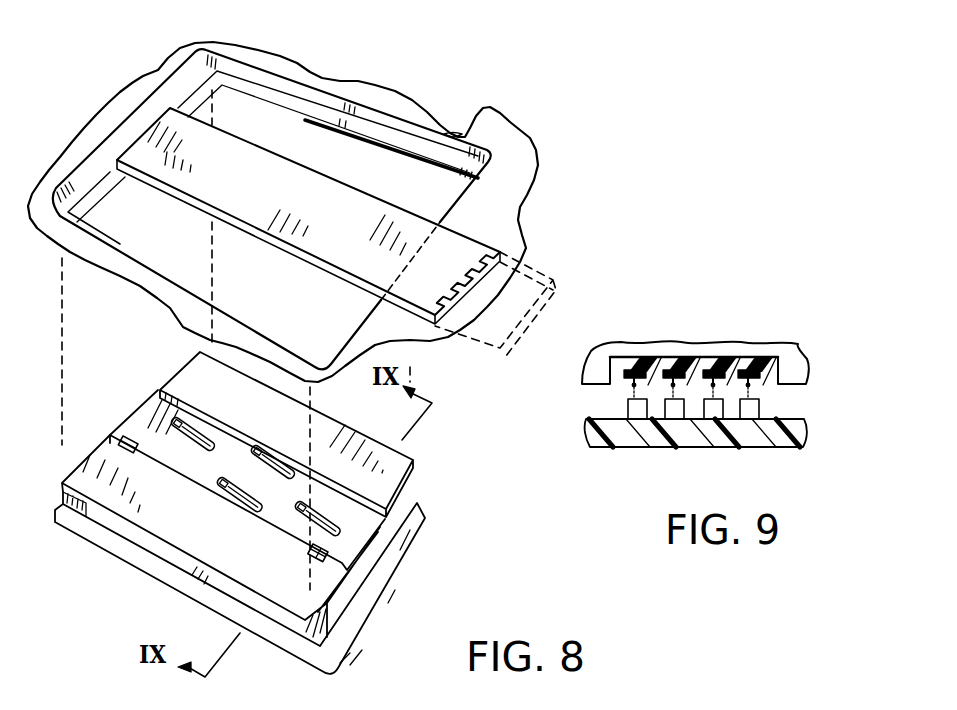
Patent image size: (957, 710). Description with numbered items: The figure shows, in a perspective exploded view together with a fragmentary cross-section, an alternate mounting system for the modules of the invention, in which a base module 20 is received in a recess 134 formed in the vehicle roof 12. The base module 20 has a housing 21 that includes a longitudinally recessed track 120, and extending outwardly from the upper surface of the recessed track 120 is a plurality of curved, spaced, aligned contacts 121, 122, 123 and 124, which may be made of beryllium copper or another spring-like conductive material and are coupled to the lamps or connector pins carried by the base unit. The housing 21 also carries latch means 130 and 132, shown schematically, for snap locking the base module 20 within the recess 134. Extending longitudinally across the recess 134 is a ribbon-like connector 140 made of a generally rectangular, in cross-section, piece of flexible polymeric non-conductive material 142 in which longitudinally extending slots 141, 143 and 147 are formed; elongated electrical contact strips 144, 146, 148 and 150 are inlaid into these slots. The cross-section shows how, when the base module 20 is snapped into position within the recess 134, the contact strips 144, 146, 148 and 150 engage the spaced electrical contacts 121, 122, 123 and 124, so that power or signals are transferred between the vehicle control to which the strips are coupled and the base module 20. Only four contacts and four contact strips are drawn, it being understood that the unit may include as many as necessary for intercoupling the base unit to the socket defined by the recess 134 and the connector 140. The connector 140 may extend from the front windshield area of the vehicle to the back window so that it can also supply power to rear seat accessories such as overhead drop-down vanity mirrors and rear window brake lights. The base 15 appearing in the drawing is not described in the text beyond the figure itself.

In FIG. 8, the vehicle roof 12 is at (527, 142).
In FIG. 8, the recess 134 is at (465, 136).
In FIG. 8, the ribbon-like connector 140 is at (478, 252).
In FIG. 8, the housing 21 is at (415, 473).
In FIG. 8, the longitudinally recessed track 120 is at (365, 530).
In FIG. 9, the longitudinally recessed track 120 is at (785, 428).
In FIG. 8, the base 15 is at (400, 556).
In FIG. 8, the base module 20 is at (399, 603).
In FIG. 8, the latch means 130 is at (132, 437).
In FIG. 8, the latch means 132 is at (313, 552).
In FIG. 8, the contact 121 is at (173, 421).
In FIG. 9, the contact 121 is at (725, 421).
In FIG. 8, the contact 122 is at (276, 447).
In FIG. 9, the contact 122 is at (760, 411).
In FIG. 8, the contact 123 is at (222, 483).
In FIG. 9, the contact 123 is at (626, 417).
In FIG. 8, the contact 124 is at (300, 508).
In FIG. 9, the contact 124 is at (670, 422).
In FIG. 9, the electrical contact strip 150 is at (788, 352).
In FIG. 9, the electrical contact strip 144 is at (633, 368).
In FIG. 9, the flexible polymeric non-conductive material 142 is at (665, 373).
In FIG. 9, the electrical contact strip 146 is at (704, 375).
In FIG. 9, the electrical contact strip 148 is at (738, 376).
In FIG. 9, the slot 141 is at (627, 403).
In FIG. 9, the slot 143 is at (688, 390).
In FIG. 9, the slot 147 is at (756, 384).